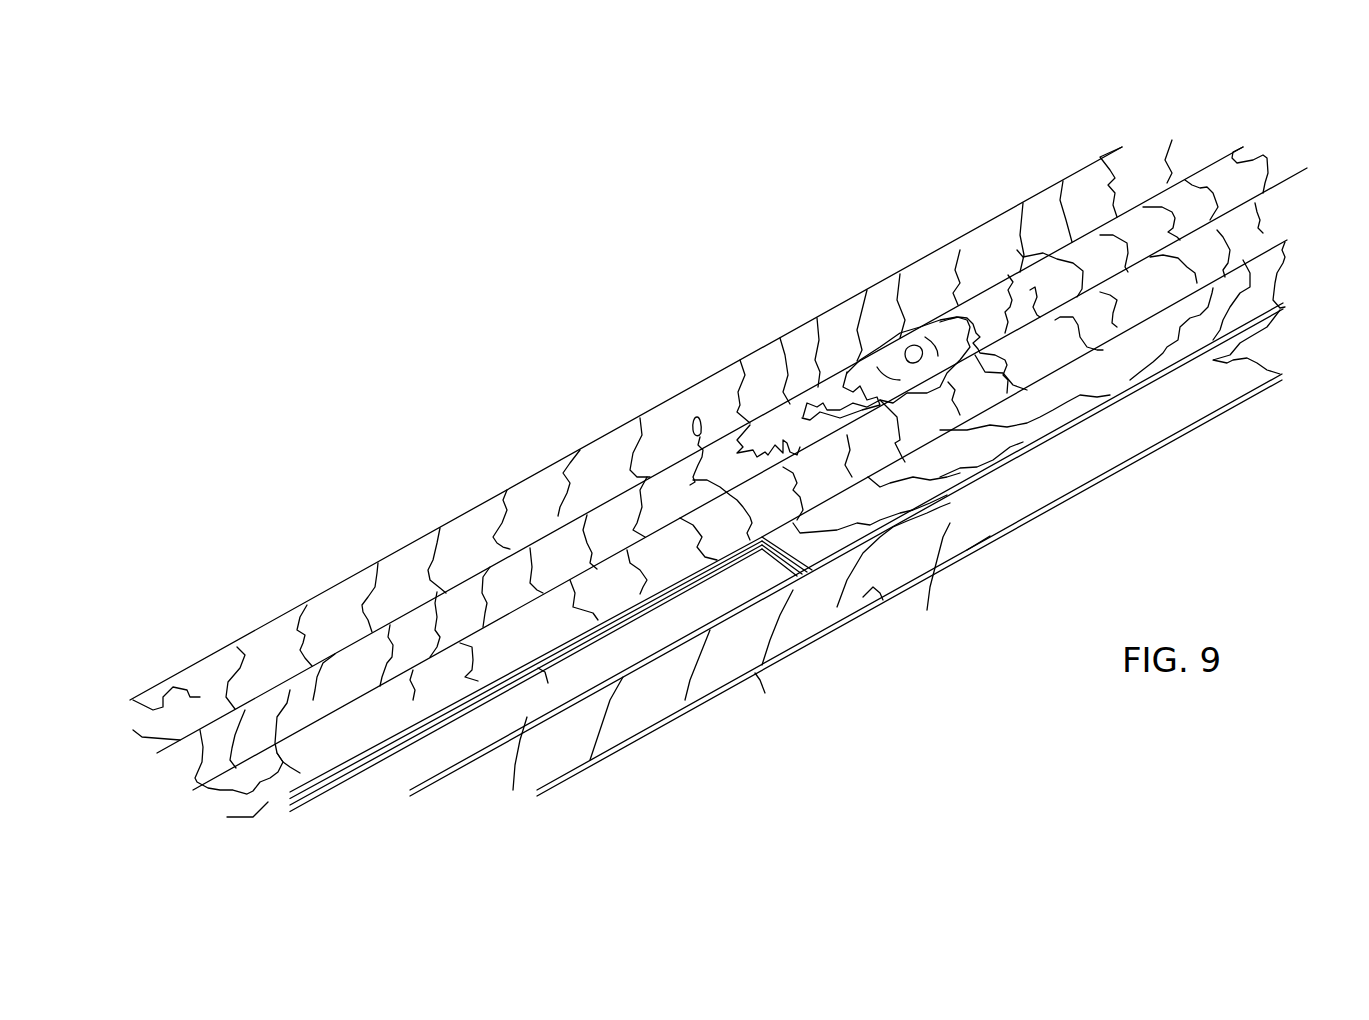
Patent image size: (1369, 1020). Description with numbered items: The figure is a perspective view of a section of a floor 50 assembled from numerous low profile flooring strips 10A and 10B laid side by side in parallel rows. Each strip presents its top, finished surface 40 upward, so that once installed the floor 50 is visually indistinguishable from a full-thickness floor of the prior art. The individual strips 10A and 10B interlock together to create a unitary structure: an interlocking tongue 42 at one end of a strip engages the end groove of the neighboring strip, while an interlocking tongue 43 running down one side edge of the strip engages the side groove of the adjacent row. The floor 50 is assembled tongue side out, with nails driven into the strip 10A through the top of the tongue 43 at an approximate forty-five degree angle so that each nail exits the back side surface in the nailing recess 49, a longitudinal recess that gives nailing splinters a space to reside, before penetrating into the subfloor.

The flooring strip 10A is at (257, 770).
The flooring strip 10B is at (165, 686).
The top finished surface 40 is at (525, 485).
The interlocking tongue 42 is at (773, 558).
The interlocking tongue 43 is at (538, 668).
The nailing recess 49 is at (967, 550).
The floor 50 is at (850, 256).